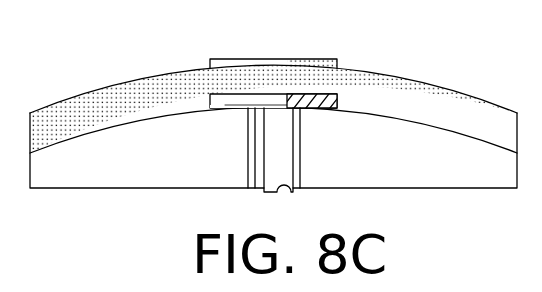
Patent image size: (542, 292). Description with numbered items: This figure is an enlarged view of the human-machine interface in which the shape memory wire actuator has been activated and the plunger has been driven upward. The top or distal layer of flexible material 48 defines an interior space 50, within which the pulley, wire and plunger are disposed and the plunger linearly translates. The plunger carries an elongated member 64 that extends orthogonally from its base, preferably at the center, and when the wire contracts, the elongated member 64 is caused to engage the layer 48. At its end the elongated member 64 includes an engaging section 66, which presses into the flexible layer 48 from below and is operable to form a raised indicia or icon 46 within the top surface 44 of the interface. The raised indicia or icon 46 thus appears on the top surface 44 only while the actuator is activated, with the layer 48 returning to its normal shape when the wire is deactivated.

The top surface 44 is at (388, 76).
The raised indicia or icon 46 is at (232, 59).
The layer of flexible material 48 is at (143, 92).
The interior space 50 is at (147, 160).
The elongated member 64 is at (248, 150).
The engaging section 66 is at (318, 110).